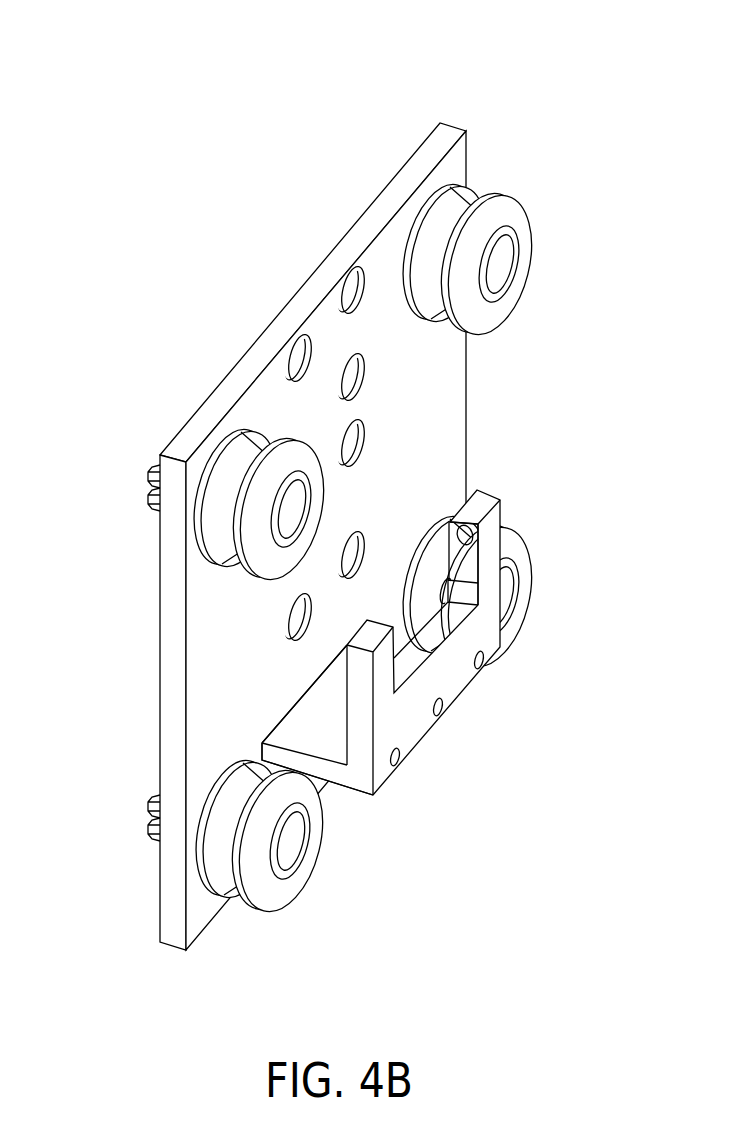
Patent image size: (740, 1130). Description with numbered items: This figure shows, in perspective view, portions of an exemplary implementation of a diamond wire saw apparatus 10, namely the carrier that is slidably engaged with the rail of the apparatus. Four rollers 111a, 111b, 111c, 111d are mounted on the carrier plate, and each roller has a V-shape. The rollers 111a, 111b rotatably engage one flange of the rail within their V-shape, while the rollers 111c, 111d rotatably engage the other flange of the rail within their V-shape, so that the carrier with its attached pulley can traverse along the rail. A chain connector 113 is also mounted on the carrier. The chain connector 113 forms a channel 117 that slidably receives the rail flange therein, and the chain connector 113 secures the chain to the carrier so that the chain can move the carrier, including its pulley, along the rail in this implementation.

The carriage assembly 10 is at (537, 90).
The roller 111a is at (258, 574).
The roller 111b is at (523, 250).
The roller 111c is at (297, 883).
The roller 111d is at (521, 578).
The chain connector 113 is at (450, 682).
The channel 117 is at (320, 702).